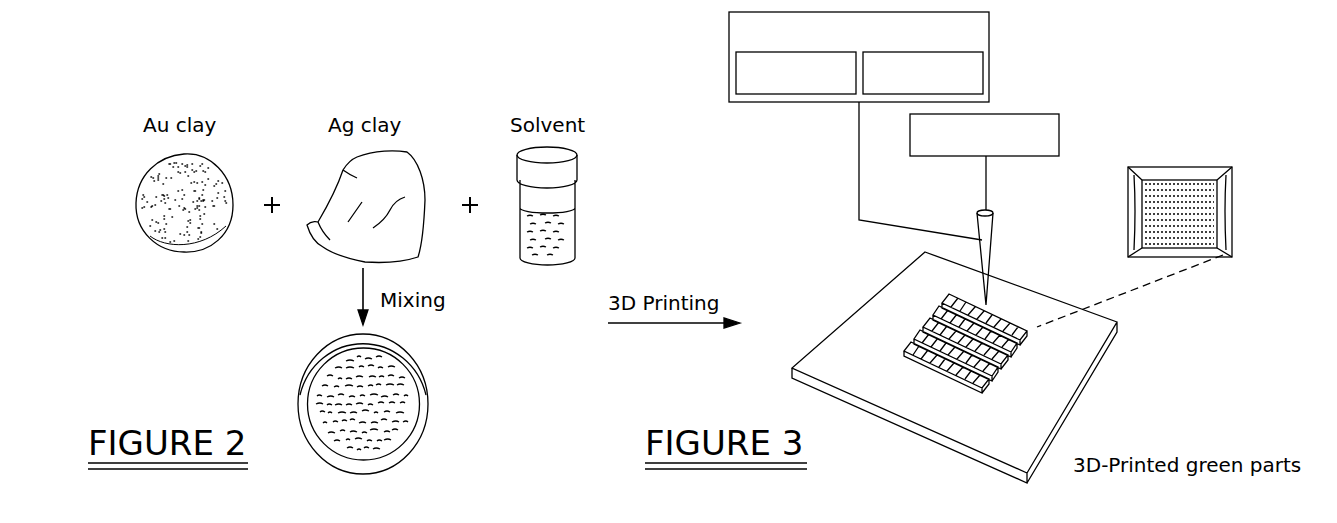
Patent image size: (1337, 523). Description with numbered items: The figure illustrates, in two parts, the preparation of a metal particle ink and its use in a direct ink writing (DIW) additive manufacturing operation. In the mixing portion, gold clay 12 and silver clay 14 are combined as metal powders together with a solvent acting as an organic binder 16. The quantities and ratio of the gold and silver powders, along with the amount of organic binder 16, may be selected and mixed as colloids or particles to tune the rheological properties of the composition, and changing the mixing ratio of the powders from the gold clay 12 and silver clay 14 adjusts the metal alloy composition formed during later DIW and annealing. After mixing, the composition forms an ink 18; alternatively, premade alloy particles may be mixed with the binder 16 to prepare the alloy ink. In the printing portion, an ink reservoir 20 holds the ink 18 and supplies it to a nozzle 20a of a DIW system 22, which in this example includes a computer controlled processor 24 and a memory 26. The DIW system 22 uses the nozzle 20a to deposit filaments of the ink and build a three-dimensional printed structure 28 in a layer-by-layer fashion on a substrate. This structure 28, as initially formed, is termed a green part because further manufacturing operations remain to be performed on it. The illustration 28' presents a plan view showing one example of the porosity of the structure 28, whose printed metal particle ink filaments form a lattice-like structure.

In FIG. 2, the gold clay 12 is at (165, 188).
In FIG. 2, the silver clay 14 is at (355, 180).
In FIG. 2, the organic binder 16 is at (567, 170).
In FIG. 2, the ink 18 is at (408, 392).
In FIG. 3, the ink reservoir 20 is at (1059, 135).
In FIG. 3, the nozzle 20a is at (993, 255).
In FIG. 3, the DIW system 22 is at (729, 21).
In FIG. 3, the processor 24 is at (736, 72).
In FIG. 3, the memory 26 is at (983, 72).
In FIG. 3, the 3D printed structure 28 is at (915, 333).
In FIG. 3, the illustration of 3D structure porosity 28' is at (1217, 212).